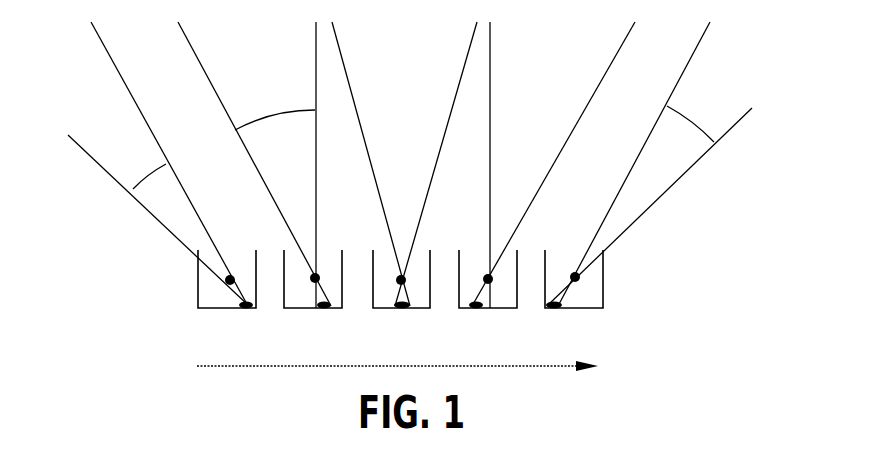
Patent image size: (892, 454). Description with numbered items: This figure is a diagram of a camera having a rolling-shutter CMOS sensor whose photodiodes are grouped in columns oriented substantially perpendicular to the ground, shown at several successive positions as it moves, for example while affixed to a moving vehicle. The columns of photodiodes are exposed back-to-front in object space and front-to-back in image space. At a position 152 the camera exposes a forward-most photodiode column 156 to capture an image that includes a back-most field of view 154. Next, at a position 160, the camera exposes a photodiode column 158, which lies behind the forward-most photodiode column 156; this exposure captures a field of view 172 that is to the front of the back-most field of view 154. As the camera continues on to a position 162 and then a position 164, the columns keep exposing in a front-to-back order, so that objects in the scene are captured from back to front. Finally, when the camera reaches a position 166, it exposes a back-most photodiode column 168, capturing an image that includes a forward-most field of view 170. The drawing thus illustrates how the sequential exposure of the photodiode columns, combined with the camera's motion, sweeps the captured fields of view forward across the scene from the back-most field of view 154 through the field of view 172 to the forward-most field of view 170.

The position 152 is at (197, 275).
The back-most field of view 154 is at (143, 165).
The forward-most photodiode column 156 is at (247, 310).
The photodiode column 158 is at (320, 311).
The position 160 is at (343, 295).
The position 162 is at (422, 310).
The position 164 is at (518, 295).
The position 166 is at (605, 275).
The back-most photodiode column 168 is at (557, 308).
The forward-most field of view 170 is at (697, 107).
The field of view 172 is at (290, 103).